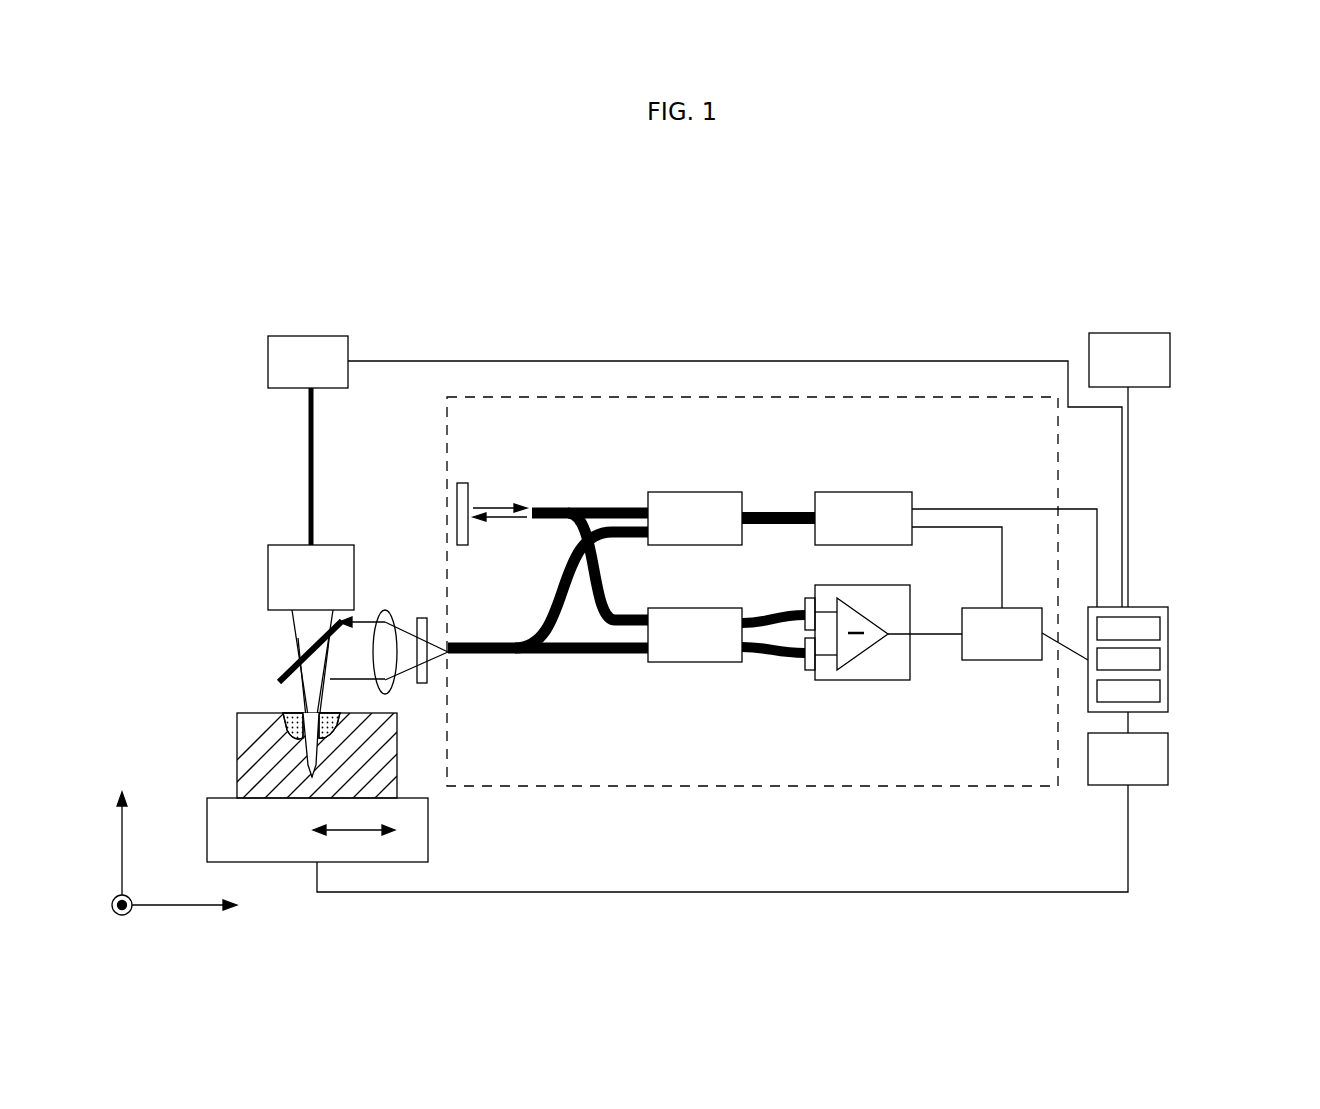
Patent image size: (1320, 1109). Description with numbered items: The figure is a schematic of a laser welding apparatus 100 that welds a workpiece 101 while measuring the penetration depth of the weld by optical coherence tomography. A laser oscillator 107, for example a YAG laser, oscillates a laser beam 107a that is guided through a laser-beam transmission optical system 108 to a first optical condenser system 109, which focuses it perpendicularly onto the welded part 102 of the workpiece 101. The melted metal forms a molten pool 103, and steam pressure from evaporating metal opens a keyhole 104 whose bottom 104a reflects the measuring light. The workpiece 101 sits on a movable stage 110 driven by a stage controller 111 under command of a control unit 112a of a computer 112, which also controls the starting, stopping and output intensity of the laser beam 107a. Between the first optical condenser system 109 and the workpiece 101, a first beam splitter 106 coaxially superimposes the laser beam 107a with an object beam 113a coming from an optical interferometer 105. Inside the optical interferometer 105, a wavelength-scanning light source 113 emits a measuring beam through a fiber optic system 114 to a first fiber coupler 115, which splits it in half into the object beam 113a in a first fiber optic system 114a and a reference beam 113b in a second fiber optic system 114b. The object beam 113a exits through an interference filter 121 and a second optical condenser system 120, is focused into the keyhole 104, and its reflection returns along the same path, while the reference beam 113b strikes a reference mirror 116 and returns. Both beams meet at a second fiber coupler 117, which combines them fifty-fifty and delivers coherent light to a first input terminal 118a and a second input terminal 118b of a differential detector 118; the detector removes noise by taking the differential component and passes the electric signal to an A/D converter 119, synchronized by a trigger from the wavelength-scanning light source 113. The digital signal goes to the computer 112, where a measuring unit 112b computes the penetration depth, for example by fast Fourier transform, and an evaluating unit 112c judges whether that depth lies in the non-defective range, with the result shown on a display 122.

The laser welding apparatus 100 is at (322, 254).
The workpiece 101 is at (272, 758).
The welded part 102 is at (160, 632).
The molten pool 103 is at (242, 721).
The keyhole 104 is at (252, 688).
The bottom of the keyhole 104a is at (322, 769).
The optical interferometer 105 is at (752, 636).
The first beam splitter 106 is at (243, 638).
The laser oscillator 107 is at (329, 333).
The laser beam 107a is at (292, 669).
The laser-beam transmission optical system 108 is at (270, 466).
The first optical condenser system 109 is at (277, 563).
The movable stage 110 is at (271, 811).
The stage controller 111 is at (1131, 804).
The computer 112 is at (1140, 616).
The control unit 112a is at (1190, 617).
The measuring unit 112b is at (1190, 647).
The evaluating unit 112c is at (1189, 679).
The wavelength-scanning light source 113 is at (863, 490).
The object beam 113a is at (372, 556).
The reference beam 113b is at (506, 510).
The fiber optic system 114 is at (781, 480).
The first fiber optic system 114a is at (548, 590).
The second fiber optic system 114b is at (590, 531).
The first fiber coupler 115 is at (695, 485).
The reference mirror 116 is at (478, 482).
The second fiber coupler 117 is at (726, 676).
The differential detector 118 is at (888, 672).
The first input terminal 118a is at (795, 681).
The second input terminal 118b is at (786, 590).
The A/D converter 119 is at (1002, 680).
The second optical condenser system 120 is at (393, 607).
The interference filter 121 is at (460, 678).
The display 122 is at (1129, 321).